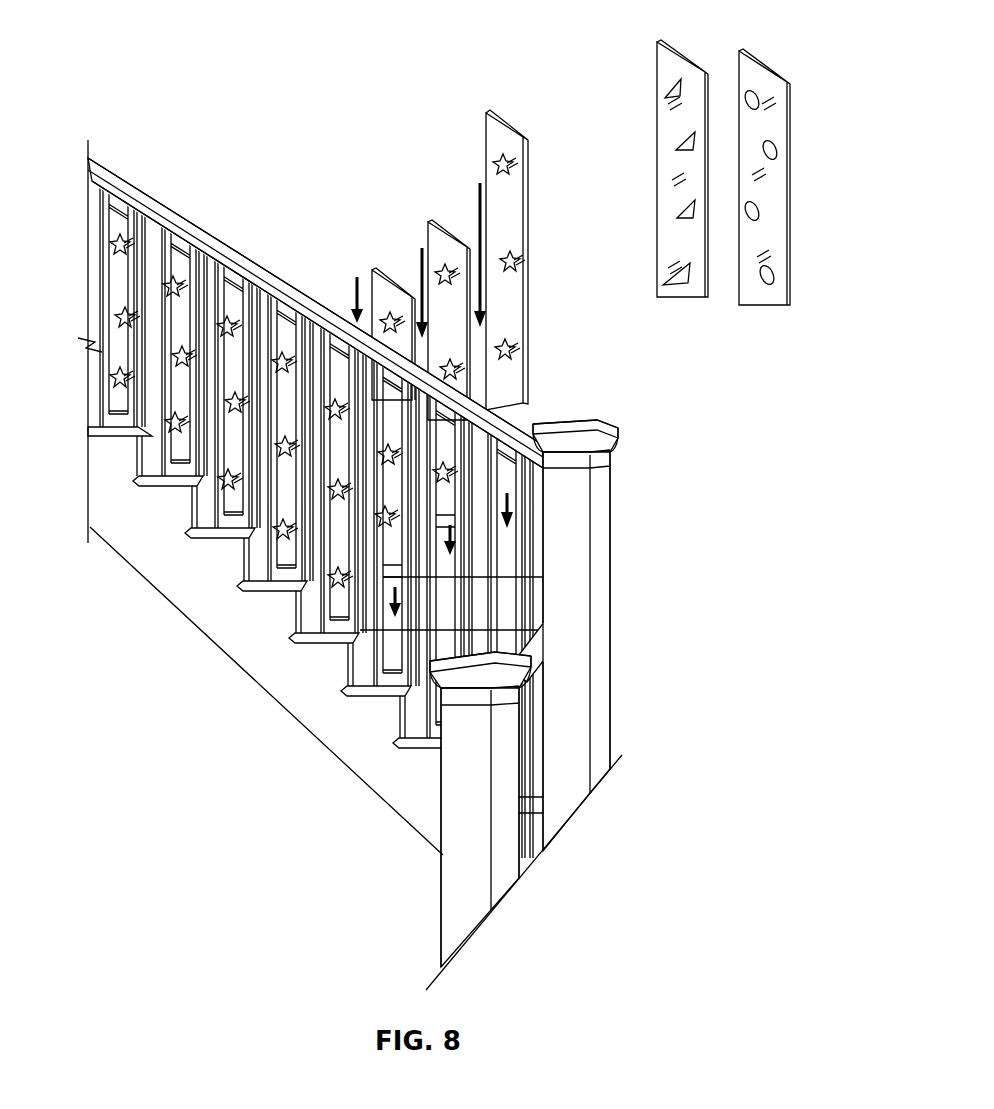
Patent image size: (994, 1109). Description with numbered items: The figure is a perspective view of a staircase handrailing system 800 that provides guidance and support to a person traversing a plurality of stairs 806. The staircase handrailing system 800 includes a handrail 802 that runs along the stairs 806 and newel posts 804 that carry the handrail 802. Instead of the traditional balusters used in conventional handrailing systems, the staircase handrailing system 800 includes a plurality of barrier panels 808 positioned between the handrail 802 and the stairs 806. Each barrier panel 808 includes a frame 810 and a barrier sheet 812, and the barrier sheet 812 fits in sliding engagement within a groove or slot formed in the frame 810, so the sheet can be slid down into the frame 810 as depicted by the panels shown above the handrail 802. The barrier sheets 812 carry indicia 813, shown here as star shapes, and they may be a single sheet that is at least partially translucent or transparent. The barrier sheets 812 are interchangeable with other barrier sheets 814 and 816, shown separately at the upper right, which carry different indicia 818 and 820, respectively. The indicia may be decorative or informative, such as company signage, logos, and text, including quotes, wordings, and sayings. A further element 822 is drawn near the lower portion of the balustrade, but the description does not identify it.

The staircase handrailing system 800 is at (122, 68).
The handrail 802 is at (178, 222).
The newel posts 804 is at (610, 442).
The stairs 806 is at (253, 588).
The barrier panels 808 is at (120, 397).
The frame 810 is at (507, 447).
The barrier sheet 812 is at (518, 218).
The indicia 813 is at (492, 165).
The barrier sheet 814 is at (672, 68).
The barrier sheet 816 is at (757, 80).
The indicia 818 is at (662, 97).
The indicia 820 is at (772, 157).
The bottom rail 822 is at (500, 570).